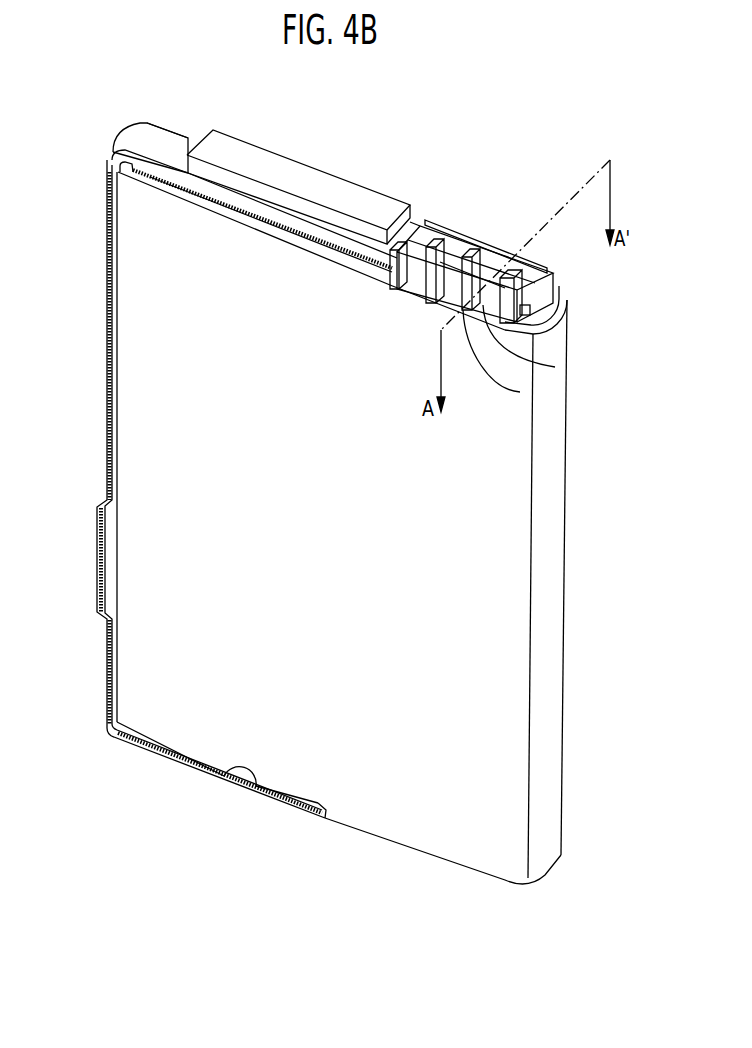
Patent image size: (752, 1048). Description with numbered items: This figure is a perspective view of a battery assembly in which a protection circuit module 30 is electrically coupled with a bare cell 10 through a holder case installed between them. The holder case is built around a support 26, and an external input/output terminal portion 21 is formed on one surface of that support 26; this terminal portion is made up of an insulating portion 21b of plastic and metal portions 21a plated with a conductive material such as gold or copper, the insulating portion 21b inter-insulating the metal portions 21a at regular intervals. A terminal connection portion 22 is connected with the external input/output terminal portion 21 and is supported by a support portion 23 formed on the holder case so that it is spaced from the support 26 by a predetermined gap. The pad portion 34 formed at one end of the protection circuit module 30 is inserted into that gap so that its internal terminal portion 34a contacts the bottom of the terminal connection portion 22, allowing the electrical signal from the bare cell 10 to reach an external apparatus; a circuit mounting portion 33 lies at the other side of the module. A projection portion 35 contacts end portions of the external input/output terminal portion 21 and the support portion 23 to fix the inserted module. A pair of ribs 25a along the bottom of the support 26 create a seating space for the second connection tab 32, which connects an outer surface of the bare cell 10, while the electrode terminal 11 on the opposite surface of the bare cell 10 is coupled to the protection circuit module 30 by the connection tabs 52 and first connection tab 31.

The bare cell 10 is at (532, 617).
The electrode terminal 11 is at (223, 772).
The external input/output terminal portion 21 is at (560, 360).
The metal portion 21a is at (555, 367).
The insulating portion 21b is at (520, 392).
The terminal connection portion 22 is at (437, 245).
The support portion 23 is at (490, 252).
The ribs 25a is at (338, 170).
The support 26 is at (303, 210).
The protection circuit module 30 is at (130, 158).
The first connection tab 31 is at (147, 137).
The second connection tab 32 is at (137, 170).
The circuit mounting portion 33 is at (258, 160).
The pad portion 34 is at (492, 262).
The internal terminal portion 34a is at (467, 252).
The projection portion 35 is at (422, 225).
The connection tab 52 is at (310, 813).